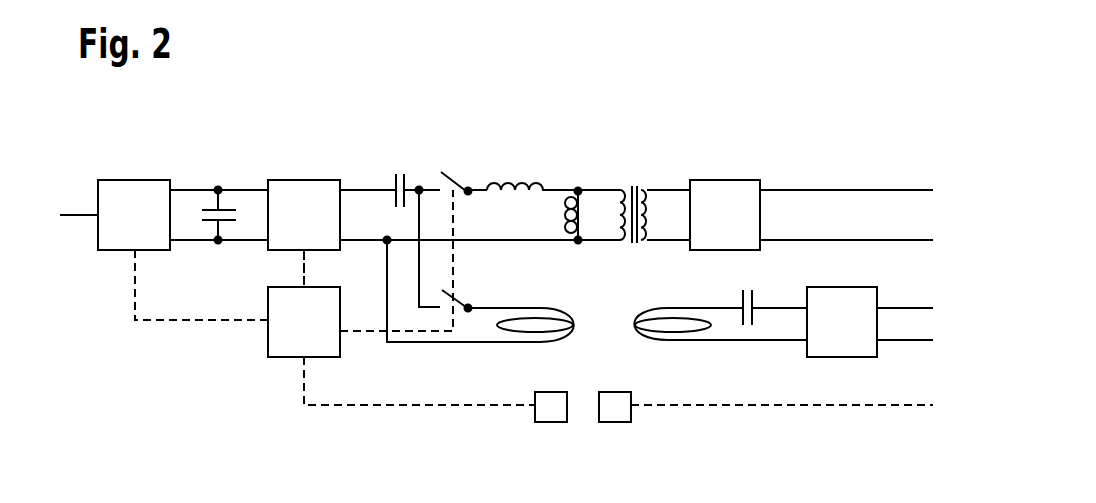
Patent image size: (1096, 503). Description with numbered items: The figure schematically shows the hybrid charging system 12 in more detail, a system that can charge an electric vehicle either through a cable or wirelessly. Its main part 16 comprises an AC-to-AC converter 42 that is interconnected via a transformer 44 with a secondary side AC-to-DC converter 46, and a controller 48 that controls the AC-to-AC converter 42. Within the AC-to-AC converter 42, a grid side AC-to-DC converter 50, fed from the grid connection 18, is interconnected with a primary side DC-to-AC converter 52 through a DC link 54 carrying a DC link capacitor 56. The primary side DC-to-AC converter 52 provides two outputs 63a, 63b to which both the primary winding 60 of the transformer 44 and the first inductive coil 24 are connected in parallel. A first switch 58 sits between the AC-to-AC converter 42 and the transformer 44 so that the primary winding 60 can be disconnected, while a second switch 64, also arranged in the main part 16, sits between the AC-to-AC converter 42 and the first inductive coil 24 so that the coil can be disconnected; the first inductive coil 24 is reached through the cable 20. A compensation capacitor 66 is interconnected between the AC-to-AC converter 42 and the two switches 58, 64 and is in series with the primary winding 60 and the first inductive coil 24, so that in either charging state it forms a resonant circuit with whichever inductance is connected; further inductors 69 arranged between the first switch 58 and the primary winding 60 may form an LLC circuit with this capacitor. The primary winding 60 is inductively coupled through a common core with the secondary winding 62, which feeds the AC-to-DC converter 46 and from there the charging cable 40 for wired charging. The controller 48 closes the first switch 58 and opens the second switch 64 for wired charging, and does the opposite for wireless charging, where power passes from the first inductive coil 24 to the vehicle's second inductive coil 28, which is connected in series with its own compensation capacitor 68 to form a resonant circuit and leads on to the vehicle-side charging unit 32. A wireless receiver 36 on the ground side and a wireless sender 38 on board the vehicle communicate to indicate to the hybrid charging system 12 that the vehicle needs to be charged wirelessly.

The hybrid charging system 12 is at (847, 148).
The main part 16 is at (126, 165).
The supply connection 18 is at (78, 216).
The cable 20 is at (479, 353).
The first inductive coil 24 is at (514, 374).
The second inductive coil 28 is at (653, 374).
The receiver electronics 32 is at (843, 357).
The wireless receiver 36 is at (550, 422).
The wireless sender 38 is at (613, 422).
The charging cable 40 is at (804, 168).
The AC-to-AC converter 42 is at (189, 168).
The transformer 44 is at (646, 179).
The secondary side AC-to-DC converter 46 is at (746, 180).
The controller 48 is at (268, 338).
The grid side AC-to-DC converter 50 is at (108, 252).
The primary side DC-to-AC converter 52 is at (276, 252).
The DC link 54 is at (278, 156).
The DC link capacitor 56 is at (230, 209).
The first switch 58 is at (444, 172).
The primary winding 60 is at (622, 186).
The secondary winding 62 is at (647, 207).
The output 63a is at (374, 189).
The output 63b is at (363, 243).
The second switch 64 is at (452, 295).
The compensation capacitor 66 is at (406, 184).
The compensation capacitor 68 is at (754, 294).
The further inductors 69 is at (563, 179).